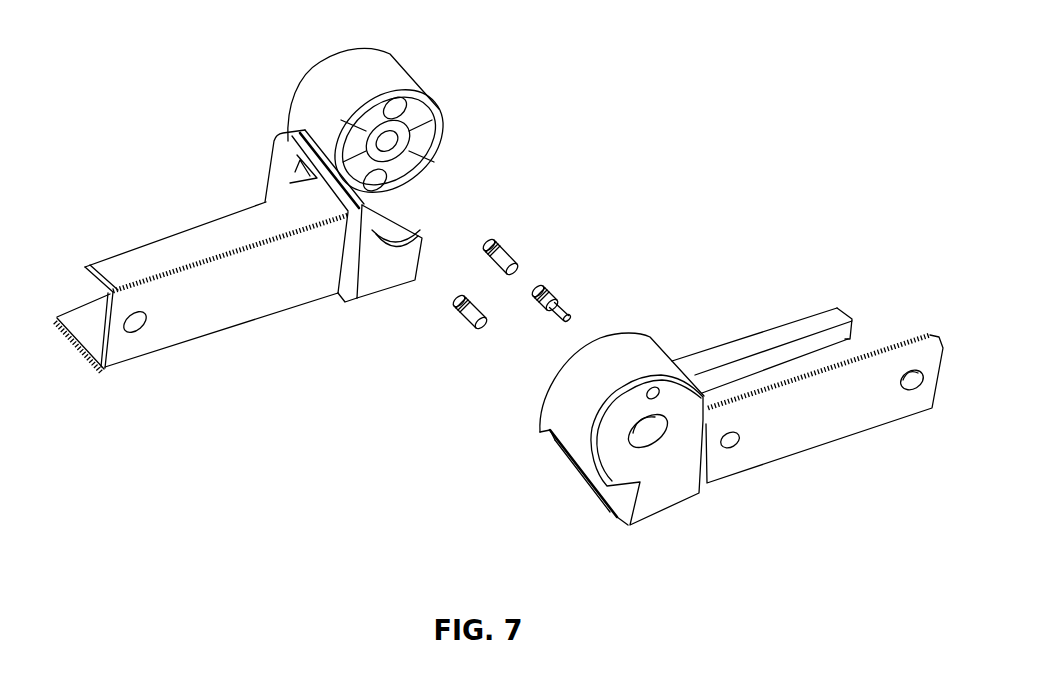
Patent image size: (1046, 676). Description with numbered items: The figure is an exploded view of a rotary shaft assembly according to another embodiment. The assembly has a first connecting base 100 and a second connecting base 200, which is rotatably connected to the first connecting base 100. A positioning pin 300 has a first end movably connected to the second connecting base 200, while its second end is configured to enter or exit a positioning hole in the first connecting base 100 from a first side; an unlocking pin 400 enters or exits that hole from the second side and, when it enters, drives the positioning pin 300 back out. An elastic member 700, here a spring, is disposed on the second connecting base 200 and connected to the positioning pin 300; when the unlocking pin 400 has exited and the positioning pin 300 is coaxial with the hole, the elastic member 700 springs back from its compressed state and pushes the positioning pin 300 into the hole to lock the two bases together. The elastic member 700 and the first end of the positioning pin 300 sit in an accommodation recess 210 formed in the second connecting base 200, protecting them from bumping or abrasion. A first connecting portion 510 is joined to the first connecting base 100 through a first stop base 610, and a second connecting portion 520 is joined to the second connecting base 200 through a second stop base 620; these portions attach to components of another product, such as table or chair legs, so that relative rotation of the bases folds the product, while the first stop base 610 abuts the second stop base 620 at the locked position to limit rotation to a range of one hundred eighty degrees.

The first connecting base 100 is at (570, 427).
The second connecting base 200 is at (327, 82).
The accommodation recess 210 is at (407, 97).
The positioning pin 300 is at (512, 250).
The unlocking pin 400 is at (570, 308).
The first connecting portion 510 is at (845, 433).
The second connecting portion 520 is at (163, 256).
The first stop base 610 is at (622, 507).
The second stop base 620 is at (377, 277).
The elastic member 700 is at (488, 255).